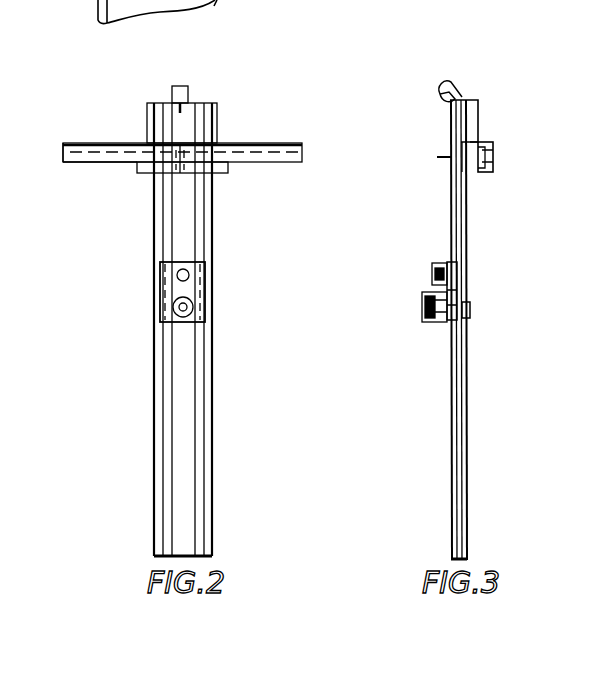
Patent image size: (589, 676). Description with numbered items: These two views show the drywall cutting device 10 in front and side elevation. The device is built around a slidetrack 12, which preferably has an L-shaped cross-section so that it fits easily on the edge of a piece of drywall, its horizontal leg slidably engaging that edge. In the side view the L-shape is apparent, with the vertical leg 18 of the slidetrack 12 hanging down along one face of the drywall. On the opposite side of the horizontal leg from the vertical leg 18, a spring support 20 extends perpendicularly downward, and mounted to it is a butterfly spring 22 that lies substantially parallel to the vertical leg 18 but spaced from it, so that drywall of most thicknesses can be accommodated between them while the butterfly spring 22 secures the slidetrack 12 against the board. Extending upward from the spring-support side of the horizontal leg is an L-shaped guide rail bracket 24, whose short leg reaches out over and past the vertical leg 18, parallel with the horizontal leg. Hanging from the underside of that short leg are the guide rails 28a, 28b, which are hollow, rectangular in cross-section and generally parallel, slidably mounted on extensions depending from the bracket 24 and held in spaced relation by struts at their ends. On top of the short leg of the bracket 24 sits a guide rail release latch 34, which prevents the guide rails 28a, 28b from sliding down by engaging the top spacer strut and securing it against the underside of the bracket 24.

In FIG. 2, the drywall cutting device 10 is at (236, 86).
In FIG. 3, the drywall cutting device 10 is at (488, 74).
In FIG. 2, the slidetrack 12 is at (270, 143).
In FIG. 2, the vertical leg 18 is at (92, 155).
In FIG. 3, the spring support 20 is at (490, 175).
In FIG. 2, the butterfly spring 22 is at (227, 178).
In FIG. 3, the guide rail bracket 24 is at (480, 118).
In FIG. 2, the guide rail 28a is at (163, 400).
In FIG. 2, the guide rail 28b is at (207, 358).
In FIG. 2, the guide rail release latch 34 is at (180, 86).
In FIG. 3, the guide rail release latch 34 is at (437, 90).